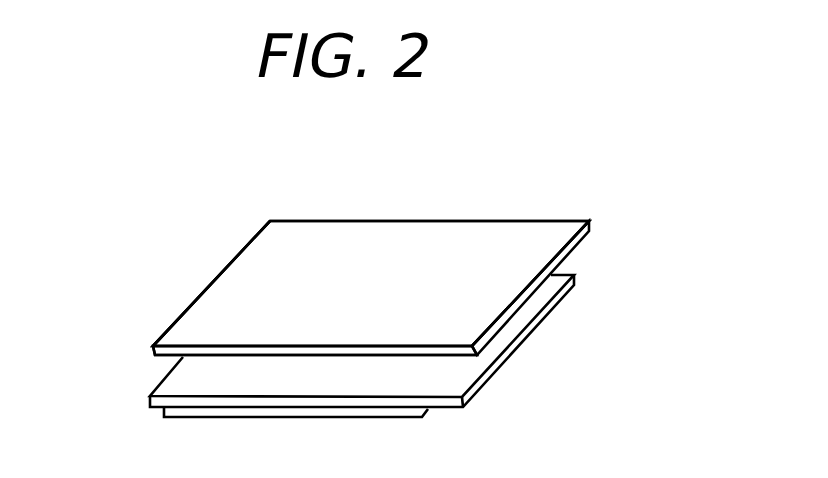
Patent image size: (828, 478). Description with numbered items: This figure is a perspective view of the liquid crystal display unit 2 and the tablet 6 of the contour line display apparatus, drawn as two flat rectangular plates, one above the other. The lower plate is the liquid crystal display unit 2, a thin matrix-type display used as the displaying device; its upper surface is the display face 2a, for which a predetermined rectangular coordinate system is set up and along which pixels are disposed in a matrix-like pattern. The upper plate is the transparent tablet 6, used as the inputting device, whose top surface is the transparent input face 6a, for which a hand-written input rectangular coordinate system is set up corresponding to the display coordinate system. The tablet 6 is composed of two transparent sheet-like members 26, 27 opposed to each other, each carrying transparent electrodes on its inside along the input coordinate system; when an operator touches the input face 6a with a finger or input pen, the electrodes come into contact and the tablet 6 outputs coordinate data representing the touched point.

The liquid crystal display unit 2 is at (574, 305).
The display face 2a is at (463, 377).
The tablet 6 is at (577, 211).
The transparent input face 6a is at (412, 240).
The transparent sheet-like member 26 is at (224, 285).
The transparent sheet-like member 27 is at (160, 350).